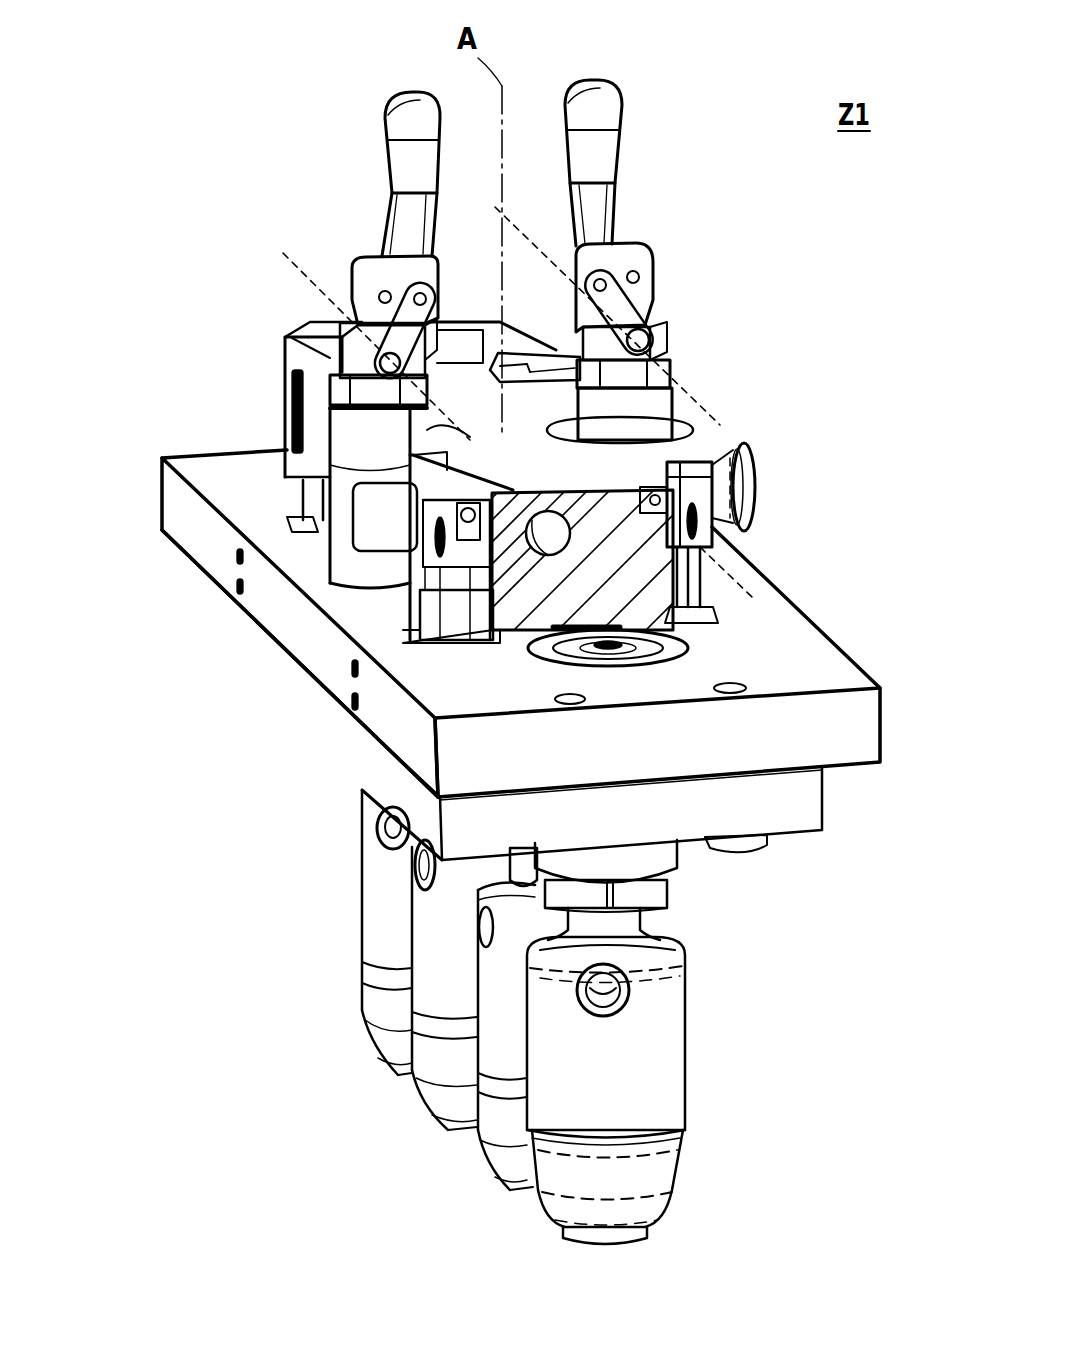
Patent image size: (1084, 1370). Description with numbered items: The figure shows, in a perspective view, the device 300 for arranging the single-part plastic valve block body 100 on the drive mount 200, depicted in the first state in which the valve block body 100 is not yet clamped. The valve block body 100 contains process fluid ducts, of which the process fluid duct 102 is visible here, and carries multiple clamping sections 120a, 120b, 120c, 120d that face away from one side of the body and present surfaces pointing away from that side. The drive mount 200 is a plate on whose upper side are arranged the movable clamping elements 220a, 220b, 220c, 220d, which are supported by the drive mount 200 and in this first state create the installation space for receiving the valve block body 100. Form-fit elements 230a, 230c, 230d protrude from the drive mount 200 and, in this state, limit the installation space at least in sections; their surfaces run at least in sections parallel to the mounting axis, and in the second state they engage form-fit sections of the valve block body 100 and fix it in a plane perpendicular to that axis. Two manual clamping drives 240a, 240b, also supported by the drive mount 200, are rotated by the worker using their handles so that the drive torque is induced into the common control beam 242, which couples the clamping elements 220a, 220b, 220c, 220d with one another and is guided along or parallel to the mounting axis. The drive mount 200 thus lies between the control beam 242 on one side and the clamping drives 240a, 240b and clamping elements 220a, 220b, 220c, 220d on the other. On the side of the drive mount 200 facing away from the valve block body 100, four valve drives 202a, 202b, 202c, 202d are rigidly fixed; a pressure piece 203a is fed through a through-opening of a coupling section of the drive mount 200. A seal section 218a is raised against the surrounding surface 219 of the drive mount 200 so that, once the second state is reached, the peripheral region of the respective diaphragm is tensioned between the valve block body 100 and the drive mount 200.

The device 300 is at (226, 202).
The drive mount 200 is at (173, 490).
The valve block body 100 is at (468, 335).
The process fluid duct 102 is at (545, 520).
The clamping section 120a is at (633, 500).
The clamping section 120b is at (523, 348).
The clamping section 120c is at (318, 343).
The clamping section 120d is at (320, 458).
The clamping element 220a is at (700, 483).
The clamping element 220b is at (553, 350).
The clamping element 220c is at (292, 362).
The clamping element 220d is at (410, 612).
The form-fit element 230a is at (687, 603).
The form-fit element 230c is at (330, 500).
The form-fit element 230d is at (570, 638).
The manual clamping drive 240a is at (666, 250).
The manual clamping drive 240b is at (340, 260).
The control beam 242 is at (233, 622).
The seal section 218a is at (705, 630).
The surrounding surface 219 is at (810, 668).
The pressure piece 203a is at (437, 713).
The valve drive 202a is at (665, 1066).
The valve drive 202b is at (508, 1152).
The valve drive 202c is at (445, 1095).
The valve drive 202d is at (386, 1040).